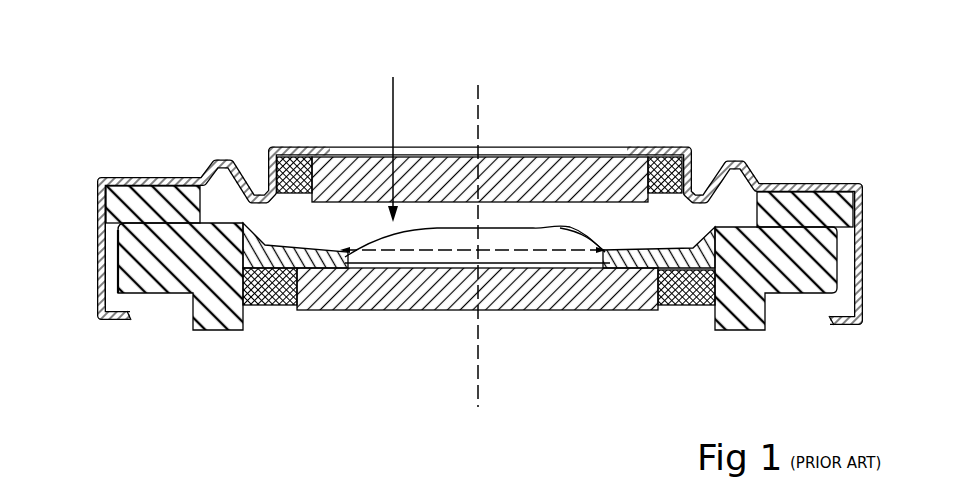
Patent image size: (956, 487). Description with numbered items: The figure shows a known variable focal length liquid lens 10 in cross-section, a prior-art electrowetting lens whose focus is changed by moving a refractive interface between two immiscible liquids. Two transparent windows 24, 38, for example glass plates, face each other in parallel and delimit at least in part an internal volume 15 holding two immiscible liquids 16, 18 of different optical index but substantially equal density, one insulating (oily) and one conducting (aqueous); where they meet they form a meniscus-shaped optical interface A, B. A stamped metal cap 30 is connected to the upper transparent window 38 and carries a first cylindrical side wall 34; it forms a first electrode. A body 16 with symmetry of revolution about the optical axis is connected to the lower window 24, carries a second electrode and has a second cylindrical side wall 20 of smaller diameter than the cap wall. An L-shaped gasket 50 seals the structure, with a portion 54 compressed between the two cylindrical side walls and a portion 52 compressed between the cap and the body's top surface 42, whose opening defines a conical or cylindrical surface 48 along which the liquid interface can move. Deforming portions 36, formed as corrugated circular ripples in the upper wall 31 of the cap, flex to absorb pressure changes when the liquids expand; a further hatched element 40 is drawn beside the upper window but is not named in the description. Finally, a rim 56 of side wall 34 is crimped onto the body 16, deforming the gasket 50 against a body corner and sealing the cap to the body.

The variable focal length lens 10 is at (760, 107).
The internal volume 15 is at (388, 136).
The first liquid / body 16 is at (357, 311).
The second liquid 18 is at (506, 303).
The second cylindrical side wall 20 is at (864, 265).
The transparent window 24 is at (575, 310).
The cap 30 is at (475, 213).
The upper wall of the cap 31 is at (313, 147).
The first cylindrical side wall 34 is at (105, 229).
The deforming portions / corrugated regions 36 is at (240, 168).
The transparent window 38 is at (572, 150).
The right spacer block 40 is at (668, 150).
The top surface of body 42 is at (773, 230).
The conical or cylindrical surface 48 is at (318, 311).
The gasket 50 is at (825, 182).
The gasket portion 52 is at (150, 177).
The gasket portion 54 is at (105, 272).
The rim 56 is at (111, 319).
The optical interface A is at (615, 240).
The optical interface B is at (560, 249).